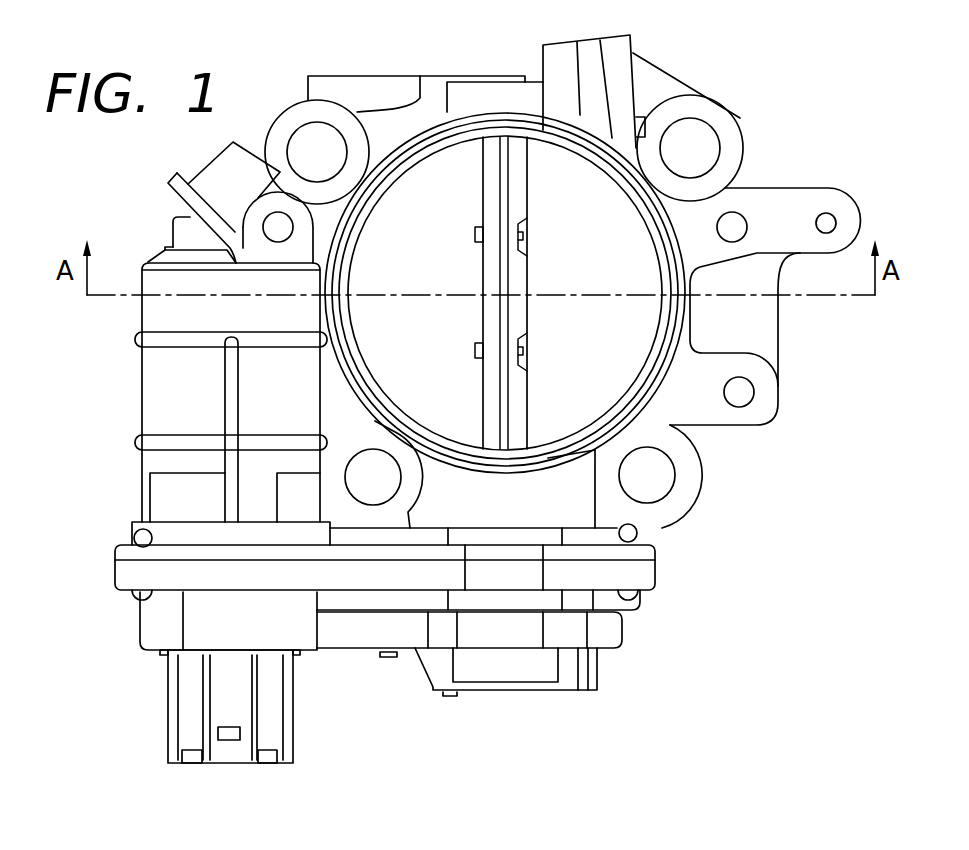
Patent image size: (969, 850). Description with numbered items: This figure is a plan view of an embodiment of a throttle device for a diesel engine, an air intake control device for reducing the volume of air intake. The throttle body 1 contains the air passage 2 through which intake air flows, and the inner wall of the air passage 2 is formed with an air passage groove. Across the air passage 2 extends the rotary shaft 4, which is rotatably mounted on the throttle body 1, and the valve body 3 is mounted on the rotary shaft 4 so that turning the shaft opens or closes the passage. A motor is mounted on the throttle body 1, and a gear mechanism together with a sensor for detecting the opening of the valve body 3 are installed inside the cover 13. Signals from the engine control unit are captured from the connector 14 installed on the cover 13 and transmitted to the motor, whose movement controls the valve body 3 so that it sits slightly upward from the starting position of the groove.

The throttle body 1 is at (680, 213).
The air passage 2 is at (573, 320).
The valve body 3 is at (505, 398).
The rotary shaft 4 is at (490, 166).
The cover 13 is at (198, 623).
The connector 14 is at (228, 690).